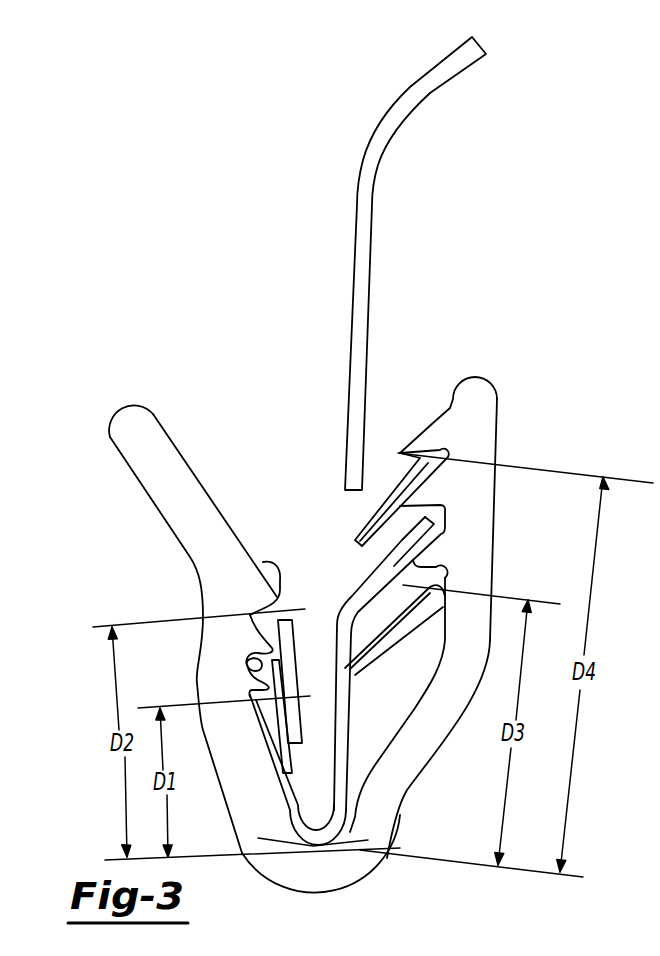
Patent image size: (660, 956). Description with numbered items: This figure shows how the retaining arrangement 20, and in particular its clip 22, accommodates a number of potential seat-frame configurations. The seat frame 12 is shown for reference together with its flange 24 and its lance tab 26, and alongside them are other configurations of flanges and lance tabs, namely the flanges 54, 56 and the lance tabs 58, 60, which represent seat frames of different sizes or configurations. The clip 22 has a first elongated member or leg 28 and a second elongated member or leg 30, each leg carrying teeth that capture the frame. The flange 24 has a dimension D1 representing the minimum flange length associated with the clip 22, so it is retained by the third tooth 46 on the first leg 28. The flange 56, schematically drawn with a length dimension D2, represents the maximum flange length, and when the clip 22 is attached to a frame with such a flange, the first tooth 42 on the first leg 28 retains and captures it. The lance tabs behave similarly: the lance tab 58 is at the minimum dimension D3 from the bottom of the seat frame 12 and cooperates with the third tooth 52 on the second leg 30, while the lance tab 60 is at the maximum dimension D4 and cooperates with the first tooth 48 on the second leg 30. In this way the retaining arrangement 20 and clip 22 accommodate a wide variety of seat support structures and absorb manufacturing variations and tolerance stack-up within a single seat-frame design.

The seat frame 12 is at (452, 84).
The retaining arrangement 20 is at (532, 347).
The clip 22 is at (121, 476).
The flange 24 is at (298, 808).
The lance tab 26 is at (355, 590).
The first leg 28 is at (165, 517).
The second leg 30 is at (498, 402).
The first tooth 42 is at (263, 562).
The third tooth 46 is at (247, 665).
The first tooth 48 is at (434, 422).
The third tooth 52 is at (447, 582).
The flange 54 is at (295, 782).
The flange 56 is at (290, 645).
The lance tab 58 is at (398, 642).
The lance tab 60 is at (398, 483).